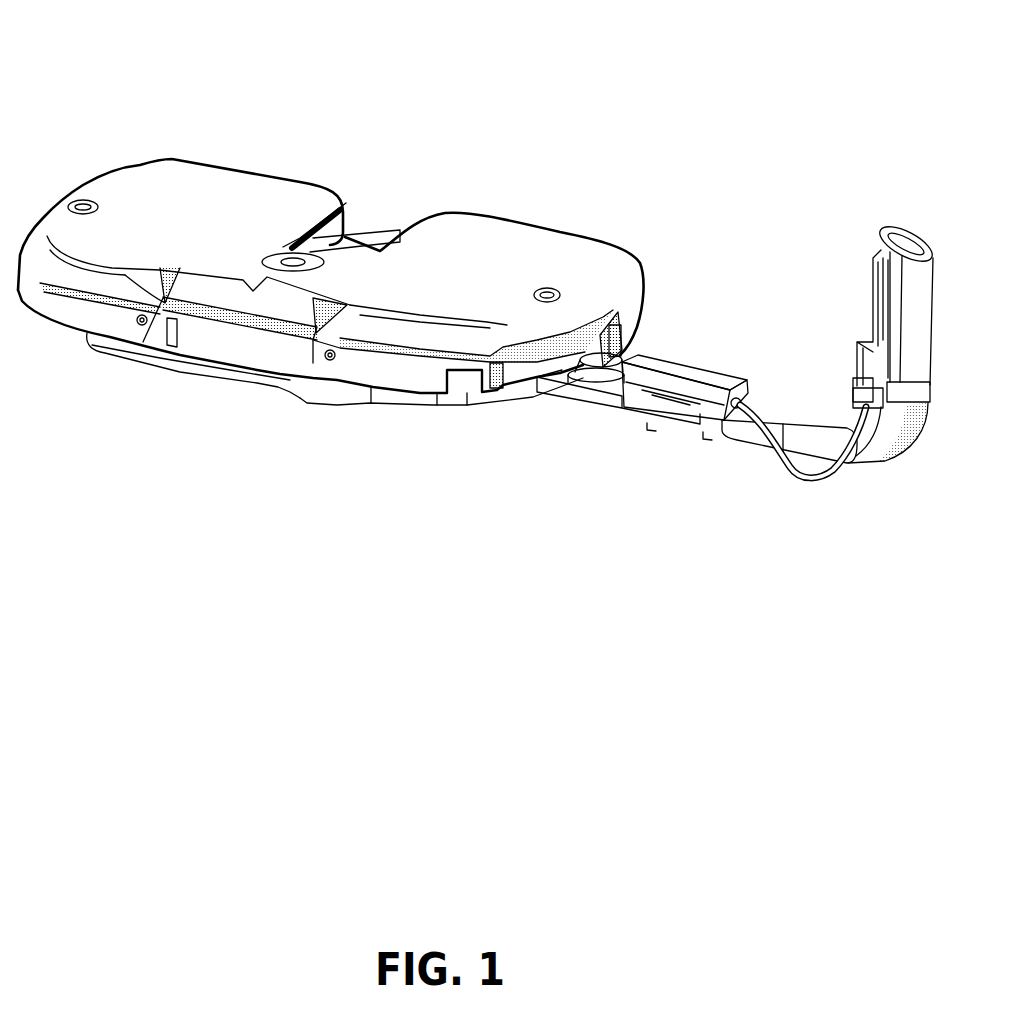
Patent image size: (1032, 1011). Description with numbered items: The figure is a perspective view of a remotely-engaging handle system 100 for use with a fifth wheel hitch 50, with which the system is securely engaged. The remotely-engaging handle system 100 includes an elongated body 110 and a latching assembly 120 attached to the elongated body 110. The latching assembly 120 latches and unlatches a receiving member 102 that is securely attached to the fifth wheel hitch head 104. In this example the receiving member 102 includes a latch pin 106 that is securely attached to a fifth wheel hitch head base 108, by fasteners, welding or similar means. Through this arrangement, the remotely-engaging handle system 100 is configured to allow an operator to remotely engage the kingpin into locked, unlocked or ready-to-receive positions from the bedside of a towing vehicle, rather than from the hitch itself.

The fifth wheel hitch 50 is at (173, 417).
The remotely-engaging handle system 100 is at (477, 297).
The receiving member 102 is at (578, 436).
The fifth wheel hitch head 104 is at (582, 405).
The latch pin 106 is at (592, 360).
The fifth wheel hitch head base 108 is at (557, 383).
The elongated body 110 is at (878, 440).
The latching assembly 120 is at (830, 251).